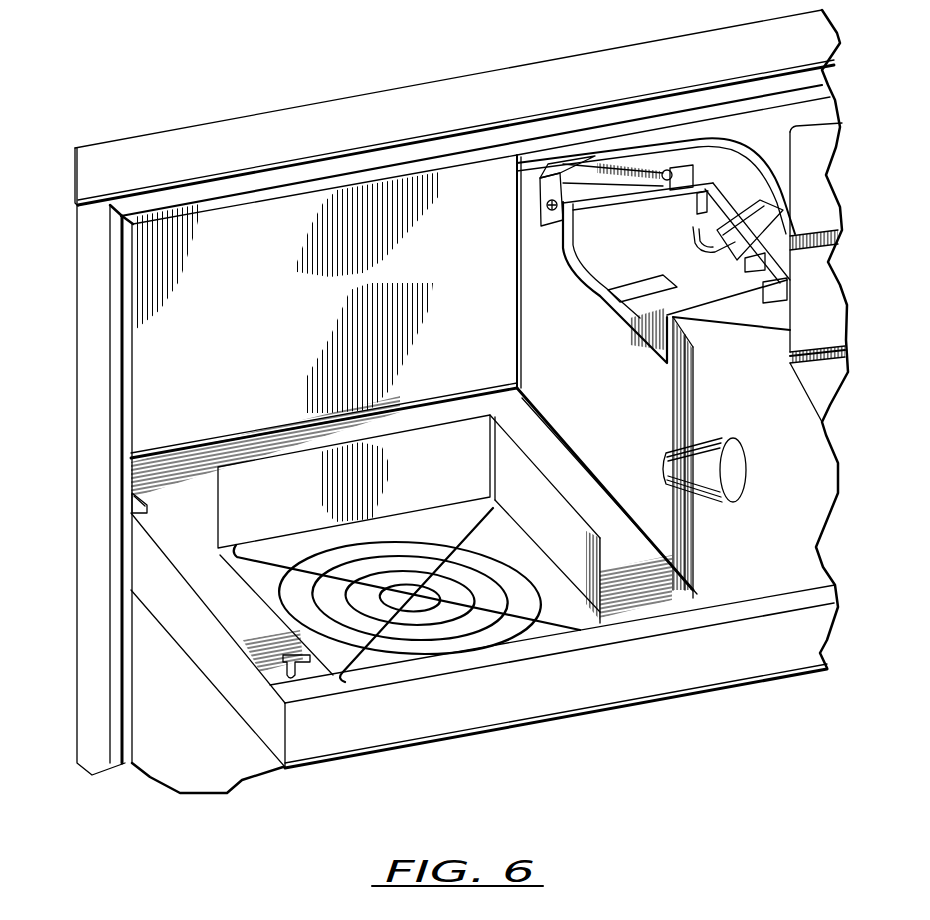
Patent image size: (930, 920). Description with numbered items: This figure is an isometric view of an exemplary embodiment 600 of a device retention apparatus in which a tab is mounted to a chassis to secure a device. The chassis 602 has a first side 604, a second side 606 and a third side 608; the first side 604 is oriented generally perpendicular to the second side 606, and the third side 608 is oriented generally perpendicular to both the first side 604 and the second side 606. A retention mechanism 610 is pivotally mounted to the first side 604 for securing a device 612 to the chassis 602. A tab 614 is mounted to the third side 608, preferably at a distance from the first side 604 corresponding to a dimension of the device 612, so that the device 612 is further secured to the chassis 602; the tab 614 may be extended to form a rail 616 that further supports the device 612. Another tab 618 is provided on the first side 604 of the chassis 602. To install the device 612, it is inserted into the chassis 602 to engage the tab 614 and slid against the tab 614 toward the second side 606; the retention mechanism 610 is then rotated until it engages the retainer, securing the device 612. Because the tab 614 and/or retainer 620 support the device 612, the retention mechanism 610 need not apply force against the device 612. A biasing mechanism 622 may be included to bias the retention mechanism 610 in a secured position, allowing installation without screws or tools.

The exemplary embodiment 600 is at (652, 718).
The chassis 602 is at (426, 401).
The first side 604 is at (485, 85).
The second side 606 is at (97, 303).
The third side 608 is at (778, 559).
The retention mechanism 610 is at (623, 250).
The device 612 is at (237, 362).
The tab 614 is at (307, 660).
The rail 616 is at (497, 657).
The tab 618 is at (138, 509).
The retainer 620 is at (540, 195).
The biasing mechanism 622 is at (735, 247).